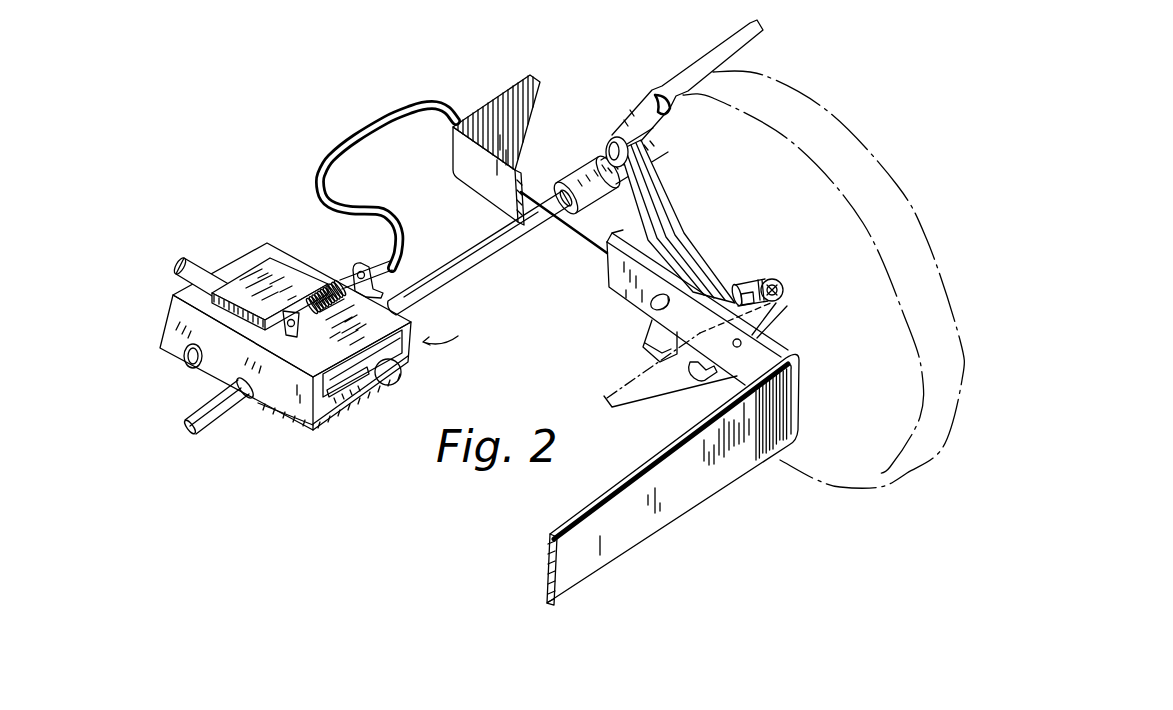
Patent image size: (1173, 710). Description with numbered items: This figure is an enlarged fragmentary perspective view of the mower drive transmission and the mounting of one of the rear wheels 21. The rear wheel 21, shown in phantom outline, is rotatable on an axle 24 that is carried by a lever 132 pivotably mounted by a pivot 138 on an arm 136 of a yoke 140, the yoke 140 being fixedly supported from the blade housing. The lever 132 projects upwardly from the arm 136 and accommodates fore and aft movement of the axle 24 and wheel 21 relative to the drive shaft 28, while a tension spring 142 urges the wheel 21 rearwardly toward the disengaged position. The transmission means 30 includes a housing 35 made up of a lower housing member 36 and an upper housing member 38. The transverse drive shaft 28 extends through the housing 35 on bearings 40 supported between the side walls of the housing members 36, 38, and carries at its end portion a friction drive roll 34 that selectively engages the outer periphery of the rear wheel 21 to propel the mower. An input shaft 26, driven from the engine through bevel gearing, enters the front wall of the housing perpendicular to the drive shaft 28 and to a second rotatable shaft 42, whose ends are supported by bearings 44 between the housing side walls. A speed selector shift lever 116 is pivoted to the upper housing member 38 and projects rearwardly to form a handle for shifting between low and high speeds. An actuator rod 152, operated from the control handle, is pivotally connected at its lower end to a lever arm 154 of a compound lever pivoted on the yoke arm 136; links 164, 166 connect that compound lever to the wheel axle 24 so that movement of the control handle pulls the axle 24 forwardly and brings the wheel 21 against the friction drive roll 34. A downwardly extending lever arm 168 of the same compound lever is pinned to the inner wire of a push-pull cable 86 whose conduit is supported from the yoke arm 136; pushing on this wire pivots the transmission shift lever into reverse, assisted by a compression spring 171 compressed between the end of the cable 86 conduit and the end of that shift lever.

The rear wheel 21 is at (848, 148).
The axle 24 is at (787, 288).
The input shaft 26 is at (197, 267).
The drive shaft 28 is at (482, 258).
The transmission means 30 is at (450, 329).
The friction drive roll 34 is at (592, 170).
The housing 35 is at (340, 407).
The lower housing member 36 is at (290, 427).
The upper housing member 38 is at (275, 253).
The bearings 40 is at (253, 407).
The second rotatable shaft 42 is at (193, 360).
The bearings 44 is at (210, 372).
The push-pull cable 86 is at (370, 135).
The speed selector shift lever 116 is at (367, 397).
The lever 132 is at (760, 317).
The arm 136 is at (625, 287).
The pivot 138 is at (747, 342).
The yoke 140 is at (675, 498).
The tension spring 142 is at (717, 380).
The actuator rod 152 is at (747, 35).
The lever arm 154 is at (637, 200).
The link 164 is at (735, 283).
The link 166 is at (767, 275).
The lever arm 168 is at (647, 343).
The compression spring 171 is at (333, 280).